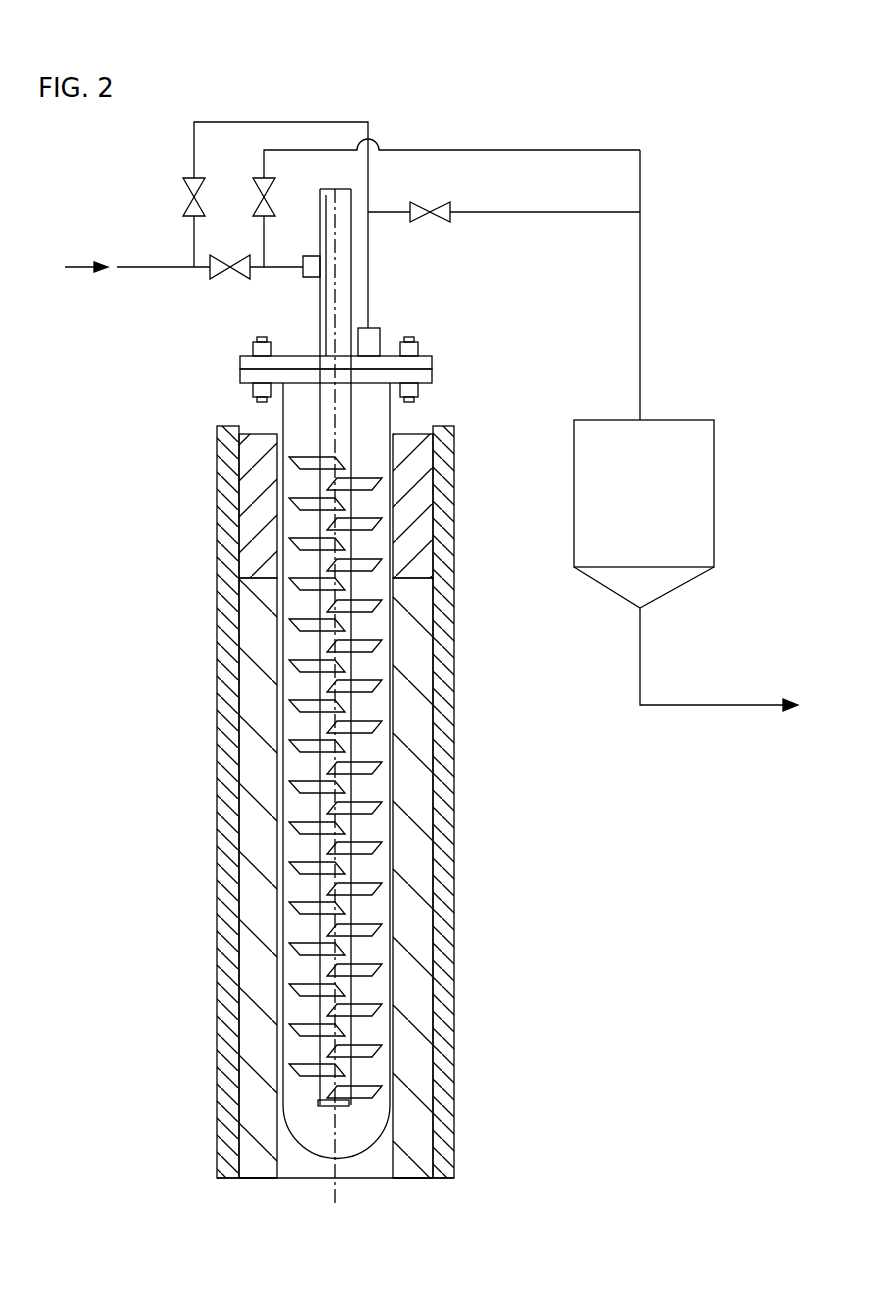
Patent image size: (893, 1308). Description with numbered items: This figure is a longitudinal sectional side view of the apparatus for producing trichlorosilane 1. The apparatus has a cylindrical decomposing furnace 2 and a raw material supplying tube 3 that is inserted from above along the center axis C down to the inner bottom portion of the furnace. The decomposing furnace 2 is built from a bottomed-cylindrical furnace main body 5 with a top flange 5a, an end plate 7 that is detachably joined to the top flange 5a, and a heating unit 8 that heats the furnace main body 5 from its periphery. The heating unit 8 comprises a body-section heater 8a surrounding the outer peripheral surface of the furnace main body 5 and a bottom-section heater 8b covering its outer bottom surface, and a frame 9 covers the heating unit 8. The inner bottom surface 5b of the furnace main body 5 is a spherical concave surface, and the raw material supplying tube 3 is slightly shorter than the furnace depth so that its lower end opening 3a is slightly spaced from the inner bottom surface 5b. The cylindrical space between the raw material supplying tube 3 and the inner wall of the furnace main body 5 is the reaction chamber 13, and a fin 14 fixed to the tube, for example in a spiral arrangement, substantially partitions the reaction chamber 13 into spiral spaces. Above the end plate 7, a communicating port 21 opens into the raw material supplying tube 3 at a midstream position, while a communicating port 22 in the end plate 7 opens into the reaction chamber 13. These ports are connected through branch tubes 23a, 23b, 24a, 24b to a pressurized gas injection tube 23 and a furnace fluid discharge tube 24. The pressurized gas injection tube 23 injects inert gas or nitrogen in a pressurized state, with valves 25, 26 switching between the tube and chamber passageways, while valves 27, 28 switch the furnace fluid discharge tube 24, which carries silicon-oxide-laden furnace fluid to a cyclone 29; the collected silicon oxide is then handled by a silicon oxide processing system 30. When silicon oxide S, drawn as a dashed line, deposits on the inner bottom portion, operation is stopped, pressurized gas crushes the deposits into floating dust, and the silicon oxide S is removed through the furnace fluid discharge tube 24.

The apparatus for producing trichlorosilane 1 is at (115, 403).
The decomposing furnace 2 is at (208, 552).
The raw material supplying tube 3 is at (350, 430).
The lower end opening 3a is at (332, 1107).
The furnace main body 5 is at (393, 662).
The top flange 5a is at (240, 372).
The inner bottom surface 5b is at (300, 1147).
The end plate 7 is at (432, 366).
The heating unit 8 is at (226, 1005).
The body-section heater 8a is at (258, 648).
The bottom-section heater 8b is at (378, 1157).
The frame 9 is at (440, 876).
The reaction chamber 13 is at (383, 773).
The fin 14 is at (300, 830).
The communicating port 21 is at (302, 262).
The communicating port 22 is at (368, 323).
The pressurized gas injection tube 23 is at (148, 262).
The branch tube 23a is at (238, 122).
The branch tube 23b is at (275, 268).
The furnace fluid discharge tube 24 is at (640, 310).
The branch tube 24a is at (510, 150).
The branch tube 24b is at (524, 213).
The valve 25 is at (183, 190).
The valve 26 is at (207, 268).
The valve 27 is at (257, 195).
The valve 28 is at (425, 210).
The cyclone 29 is at (715, 457).
The silicon oxide processing system 30 is at (733, 705).
The center axis C is at (335, 413).
The silicon oxide S is at (380, 1128).